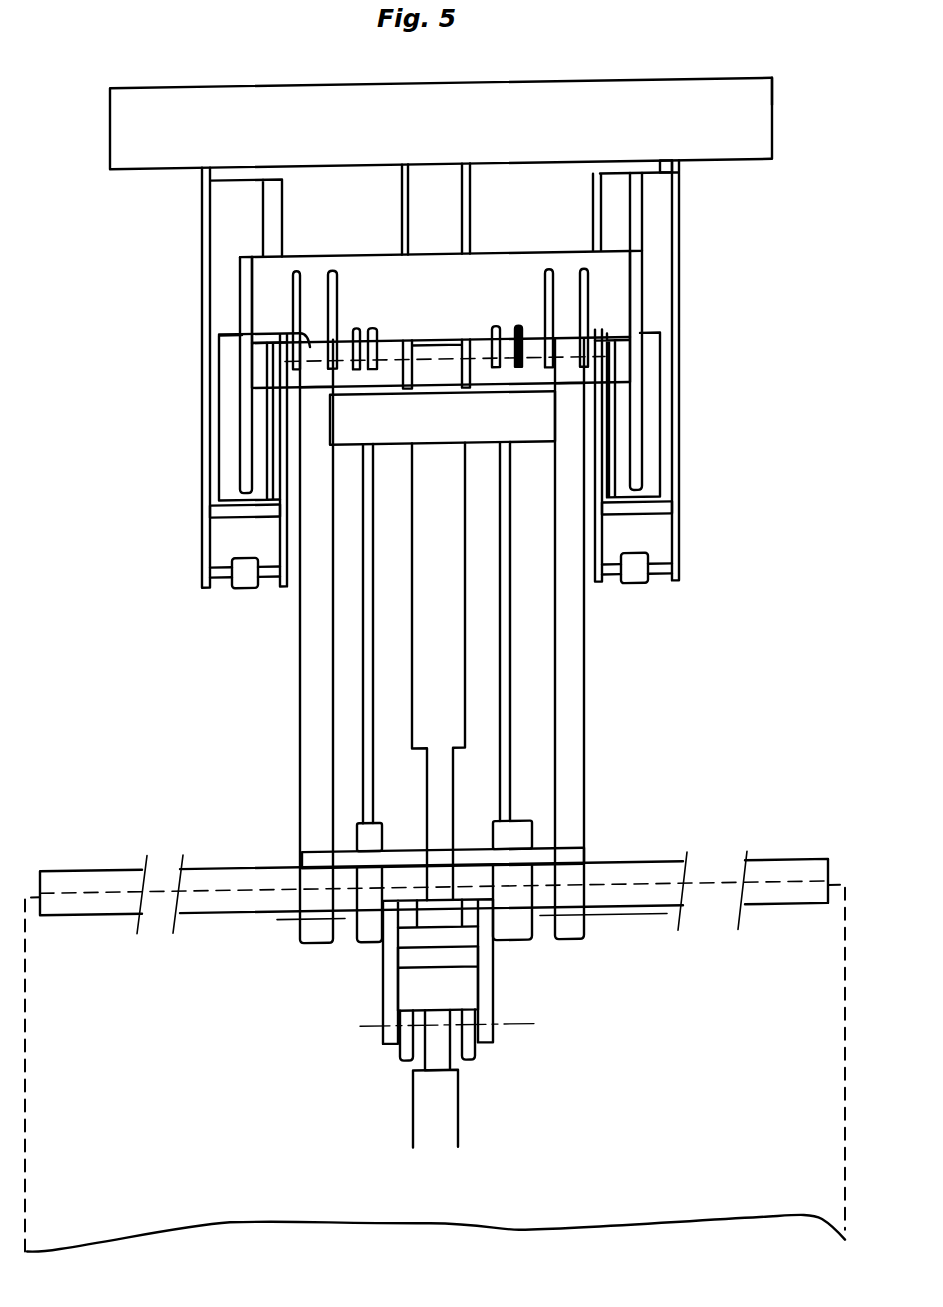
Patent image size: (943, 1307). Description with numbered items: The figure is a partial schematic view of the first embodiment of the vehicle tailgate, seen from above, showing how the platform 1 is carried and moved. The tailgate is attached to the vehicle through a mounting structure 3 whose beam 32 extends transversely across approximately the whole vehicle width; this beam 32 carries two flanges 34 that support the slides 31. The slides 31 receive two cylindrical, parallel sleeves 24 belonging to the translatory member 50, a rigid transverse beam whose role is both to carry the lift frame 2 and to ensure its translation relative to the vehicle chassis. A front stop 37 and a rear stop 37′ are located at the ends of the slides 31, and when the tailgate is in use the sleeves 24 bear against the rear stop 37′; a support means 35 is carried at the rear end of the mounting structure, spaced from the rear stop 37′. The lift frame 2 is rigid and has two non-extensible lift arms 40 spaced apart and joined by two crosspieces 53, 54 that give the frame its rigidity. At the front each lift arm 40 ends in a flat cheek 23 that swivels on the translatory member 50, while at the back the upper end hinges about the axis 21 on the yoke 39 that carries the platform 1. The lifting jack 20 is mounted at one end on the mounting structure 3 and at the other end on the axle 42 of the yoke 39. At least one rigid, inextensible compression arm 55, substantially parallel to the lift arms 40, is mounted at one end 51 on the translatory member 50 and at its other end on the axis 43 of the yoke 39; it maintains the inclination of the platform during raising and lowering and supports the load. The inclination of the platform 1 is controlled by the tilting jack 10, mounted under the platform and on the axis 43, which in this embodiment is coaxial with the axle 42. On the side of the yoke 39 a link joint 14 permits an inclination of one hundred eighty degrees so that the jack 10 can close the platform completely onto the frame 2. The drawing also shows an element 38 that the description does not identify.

The platform 1 is at (416, 1210).
The lift frame 2 is at (584, 672).
The mounting structure 3 is at (700, 84).
The tilting jack 10 is at (456, 1136).
The link joint 14 is at (492, 1040).
The lifting jack 20 is at (462, 746).
The axis 21 is at (605, 917).
The flat cheek 23 is at (293, 298).
The cylindrical sleeves 24 is at (652, 422).
The slides 31 is at (640, 236).
The beam 32 is at (768, 76).
The flanges 34 is at (680, 372).
The support means 35 is at (636, 590).
The front stop 37 is at (666, 170).
The rear stop 37′ is at (658, 517).
The connecting bar 38 is at (298, 331).
The yoke 39 is at (468, 940).
The lift arms 40 is at (300, 740).
The axle 42 is at (456, 912).
The axis 43 is at (393, 918).
The translatory member 50 is at (622, 315).
The end of compression arm 51 is at (365, 371).
The crosspiece 53 is at (345, 420).
The crosspiece 54 is at (345, 858).
The compression arm 55 is at (368, 652).